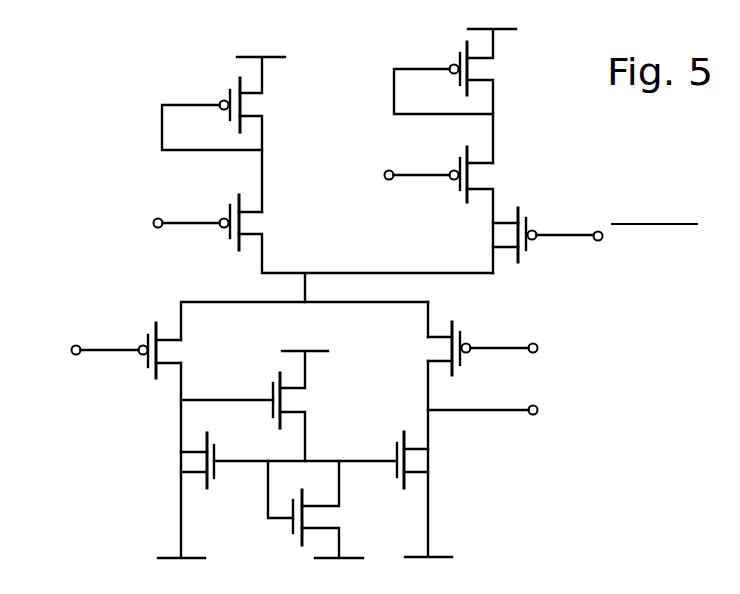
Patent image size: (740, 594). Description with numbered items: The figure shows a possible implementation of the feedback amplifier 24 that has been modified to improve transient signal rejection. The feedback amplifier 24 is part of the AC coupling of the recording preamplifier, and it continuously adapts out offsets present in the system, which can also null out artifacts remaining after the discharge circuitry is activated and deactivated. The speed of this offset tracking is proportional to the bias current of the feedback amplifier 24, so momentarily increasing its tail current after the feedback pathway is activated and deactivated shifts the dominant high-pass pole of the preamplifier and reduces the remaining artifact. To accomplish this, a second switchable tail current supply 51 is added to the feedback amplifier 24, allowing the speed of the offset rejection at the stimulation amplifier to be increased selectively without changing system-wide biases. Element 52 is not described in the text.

The second switchable tail current supply 51 is at (375, 165).
The feedback amplifier 24 is at (630, 478).
The FastBias output transistor (no visible numeral on this sheet; structural group) 52 is at (595, 235).